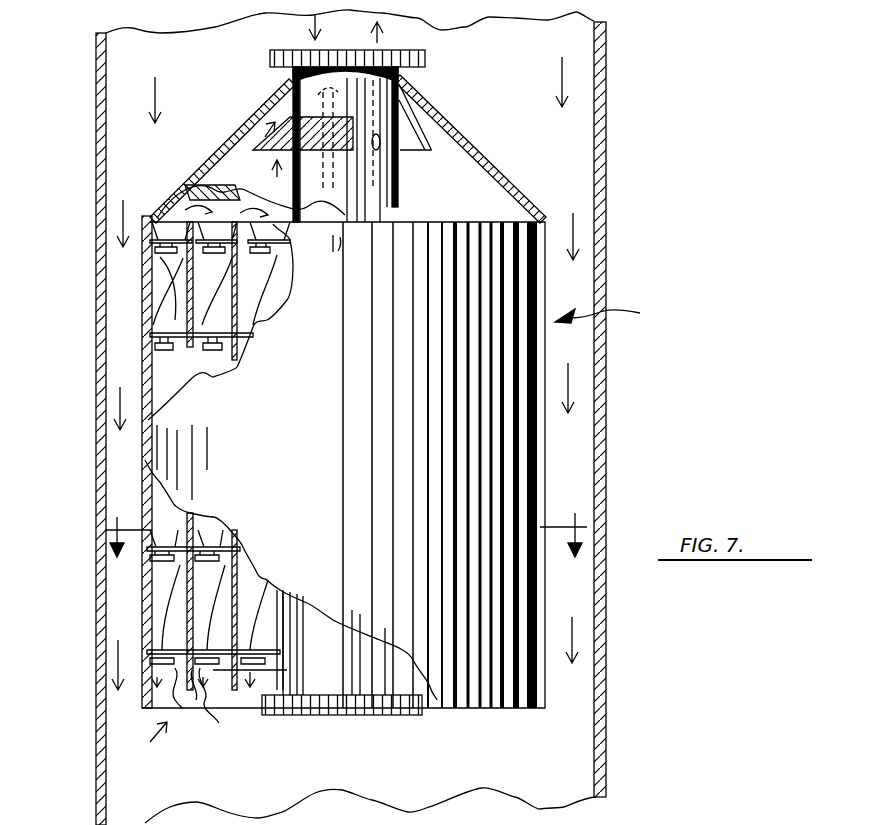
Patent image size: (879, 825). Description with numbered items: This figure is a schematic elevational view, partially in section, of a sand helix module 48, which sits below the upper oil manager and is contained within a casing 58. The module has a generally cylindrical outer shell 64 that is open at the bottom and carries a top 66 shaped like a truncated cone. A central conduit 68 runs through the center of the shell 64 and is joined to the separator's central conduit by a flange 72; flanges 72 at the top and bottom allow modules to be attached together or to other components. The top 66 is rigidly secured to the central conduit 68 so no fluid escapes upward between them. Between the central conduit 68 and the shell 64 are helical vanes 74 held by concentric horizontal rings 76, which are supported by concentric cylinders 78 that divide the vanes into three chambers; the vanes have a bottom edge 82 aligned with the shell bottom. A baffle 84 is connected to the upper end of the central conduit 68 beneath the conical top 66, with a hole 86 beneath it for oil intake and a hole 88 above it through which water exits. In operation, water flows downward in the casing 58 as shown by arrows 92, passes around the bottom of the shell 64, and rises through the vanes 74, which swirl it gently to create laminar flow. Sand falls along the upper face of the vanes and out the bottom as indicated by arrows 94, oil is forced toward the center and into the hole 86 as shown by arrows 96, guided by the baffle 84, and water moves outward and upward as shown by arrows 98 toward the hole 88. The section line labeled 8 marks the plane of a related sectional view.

The sand helix module 48 is at (611, 313).
The casing 58 is at (605, 417).
The outer shell 64 is at (460, 703).
The top 66 is at (430, 103).
The central conduit 68 is at (291, 73).
The flange 72 is at (270, 58).
The helical vanes 74 is at (163, 214).
The concentric horizontal rings 76 is at (148, 337).
The concentric cylinders 78 is at (238, 650).
The bottom edge 82 is at (219, 723).
The baffle 84 is at (430, 147).
The hole 86 is at (392, 162).
The hole 88 is at (330, 105).
The arrows 92 is at (152, 97).
The arrows 94 is at (252, 672).
The arrows 96 is at (268, 168).
The arrows 98 is at (253, 127).
The section line 8- 8 is at (346, 549).